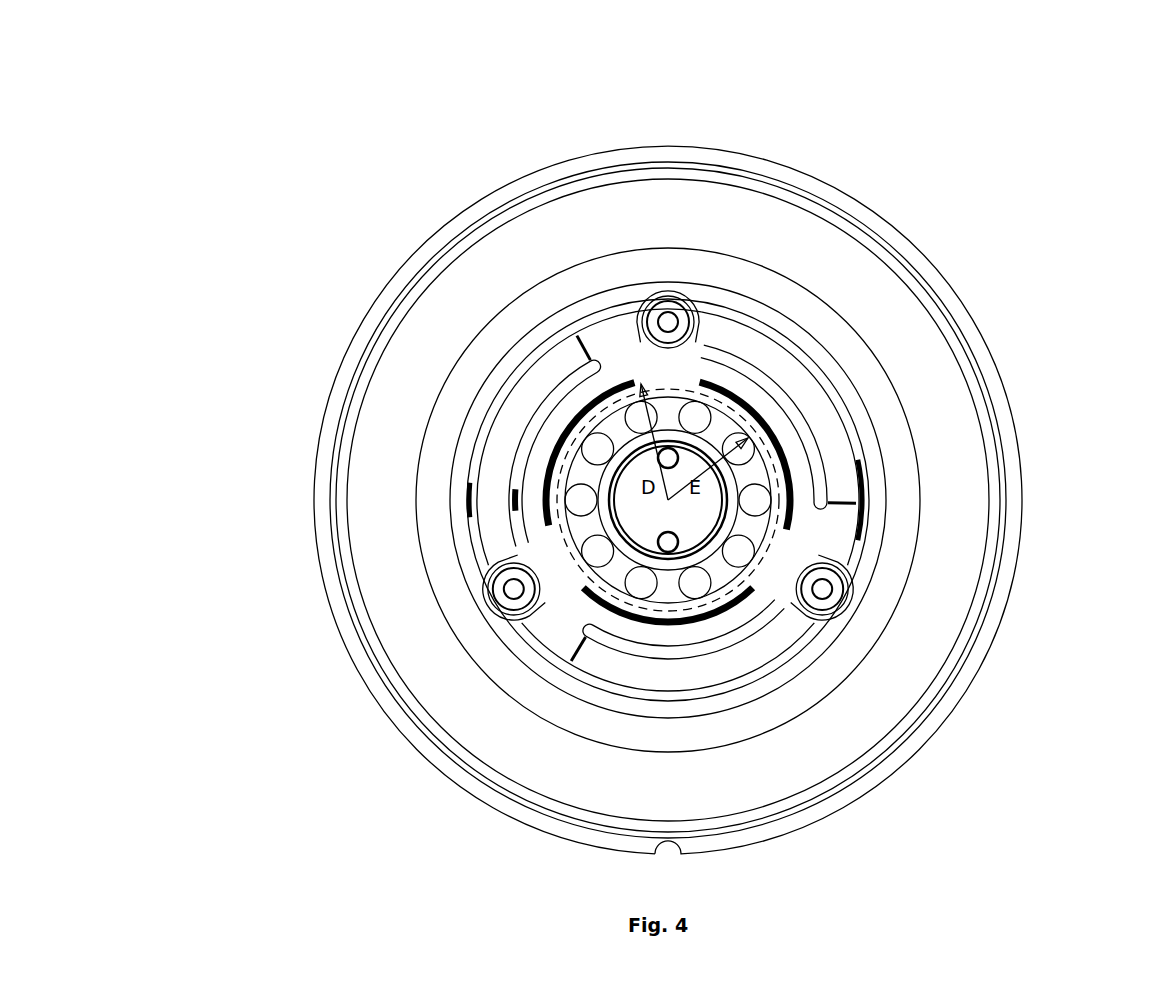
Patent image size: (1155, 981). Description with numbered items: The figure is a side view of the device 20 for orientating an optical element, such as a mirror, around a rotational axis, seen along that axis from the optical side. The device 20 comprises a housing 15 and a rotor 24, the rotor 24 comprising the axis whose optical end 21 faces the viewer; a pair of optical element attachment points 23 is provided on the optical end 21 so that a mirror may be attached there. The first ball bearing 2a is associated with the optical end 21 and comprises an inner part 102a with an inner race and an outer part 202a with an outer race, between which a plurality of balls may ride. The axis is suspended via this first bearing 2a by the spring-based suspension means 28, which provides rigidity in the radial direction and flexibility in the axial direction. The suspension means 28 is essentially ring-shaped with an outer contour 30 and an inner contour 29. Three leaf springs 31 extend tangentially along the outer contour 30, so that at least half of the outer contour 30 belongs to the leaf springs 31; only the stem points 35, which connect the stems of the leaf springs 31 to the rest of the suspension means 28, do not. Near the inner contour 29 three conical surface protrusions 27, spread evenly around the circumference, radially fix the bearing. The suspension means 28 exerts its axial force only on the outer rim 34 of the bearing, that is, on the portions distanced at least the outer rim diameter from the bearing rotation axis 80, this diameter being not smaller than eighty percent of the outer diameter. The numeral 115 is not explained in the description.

The device 20 is at (972, 80).
The housing 15 is at (433, 230).
The housing flange 115 is at (452, 220).
The inner contour 29 is at (782, 682).
The outer contour 30 is at (860, 428).
The leaf spring 31 is at (527, 380).
The spring-based suspension means 28 is at (618, 298).
The stem point 35 is at (585, 338).
The conical surface protrusion 27 is at (688, 478).
The first ball bearing 2a is at (582, 427).
The inner part 102a is at (568, 442).
The outer rim 34 is at (758, 506).
The outer part 202a is at (602, 480).
The rotor 24 is at (625, 513).
The optical end 21 is at (602, 527).
The optical element attachment point 23 is at (703, 380).
The bearing rotation axis 80 is at (668, 515).